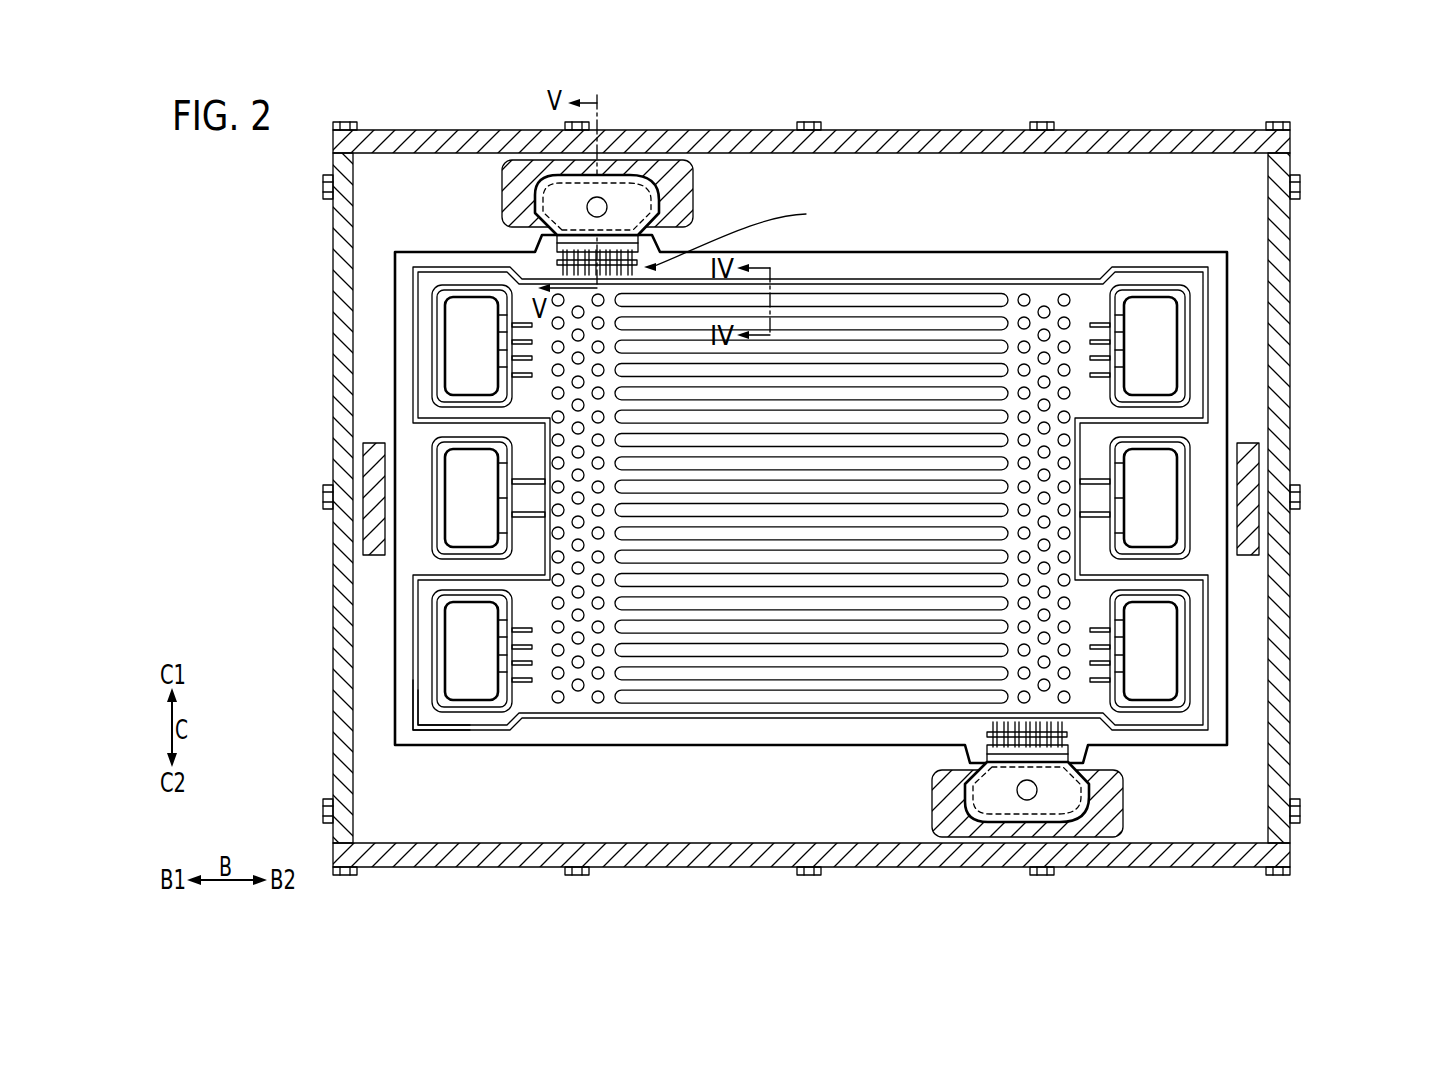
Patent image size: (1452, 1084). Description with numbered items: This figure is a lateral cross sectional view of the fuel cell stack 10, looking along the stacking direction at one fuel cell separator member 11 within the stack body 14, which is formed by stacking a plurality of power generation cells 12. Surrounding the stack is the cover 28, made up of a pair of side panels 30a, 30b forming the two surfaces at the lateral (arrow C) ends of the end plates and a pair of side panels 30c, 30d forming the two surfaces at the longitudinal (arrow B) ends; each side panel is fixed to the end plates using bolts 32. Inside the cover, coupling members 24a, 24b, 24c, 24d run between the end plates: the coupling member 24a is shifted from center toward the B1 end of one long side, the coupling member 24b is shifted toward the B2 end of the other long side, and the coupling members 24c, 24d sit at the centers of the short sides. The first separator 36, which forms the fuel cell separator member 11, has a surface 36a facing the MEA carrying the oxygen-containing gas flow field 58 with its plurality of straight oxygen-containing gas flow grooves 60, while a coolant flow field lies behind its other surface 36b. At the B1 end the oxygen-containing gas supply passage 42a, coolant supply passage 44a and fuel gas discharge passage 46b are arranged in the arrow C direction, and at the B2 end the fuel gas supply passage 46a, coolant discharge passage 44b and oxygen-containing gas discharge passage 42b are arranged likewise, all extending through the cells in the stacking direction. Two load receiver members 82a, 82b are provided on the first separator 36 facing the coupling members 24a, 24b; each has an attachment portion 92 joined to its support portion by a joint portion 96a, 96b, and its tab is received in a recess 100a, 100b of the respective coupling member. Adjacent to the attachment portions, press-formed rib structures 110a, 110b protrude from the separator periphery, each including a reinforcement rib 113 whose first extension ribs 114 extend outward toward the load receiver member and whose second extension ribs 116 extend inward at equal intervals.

The fuel cell stack 10 is at (247, 181).
The fuel cell separator member 11 is at (1235, 243).
The power generation cell 12 is at (901, 476).
The stack body 14 is at (901, 476).
The coupling member 24a is at (684, 179).
The coupling member 24b is at (945, 822).
The coupling member 24c is at (372, 462).
The coupling member 24d is at (1250, 463).
The cover 28 is at (812, 500).
The side panel 30a is at (866, 129).
The side panel 30b is at (498, 858).
The side panel 30c is at (342, 718).
The side panel 30d is at (1279, 741).
The bolt 32 is at (359, 125).
The first separator 36 is at (1059, 251).
The surface 36a is at (595, 733).
The surface 36b is at (652, 730).
The oxygen-containing gas supply passage 42a is at (460, 333).
The oxygen-containing gas discharge passage 42b is at (1165, 640).
The coolant supply passage 44a is at (460, 520).
The coolant discharge passage 44b is at (1165, 525).
The fuel gas supply passage 46a is at (1163, 334).
The fuel gas discharge passage 46b is at (460, 638).
The oxygen-containing gas flow field 58 is at (811, 450).
The oxygen-containing gas flow groove 60 is at (934, 312).
The load receiver member 82a is at (607, 180).
The load receiver member 82b is at (1013, 817).
The attachment portion 92 is at (739, 233).
The joint portion 96a is at (611, 243).
The joint portion 96b is at (1012, 757).
The recess 100a is at (665, 208).
The recess 100b is at (963, 790).
The rib structure 110a is at (639, 247).
The rib structure 110b is at (986, 751).
The reinforcement rib 113 is at (591, 227).
The first extension rib 114 is at (570, 244).
The second extension rib 116 is at (562, 273).